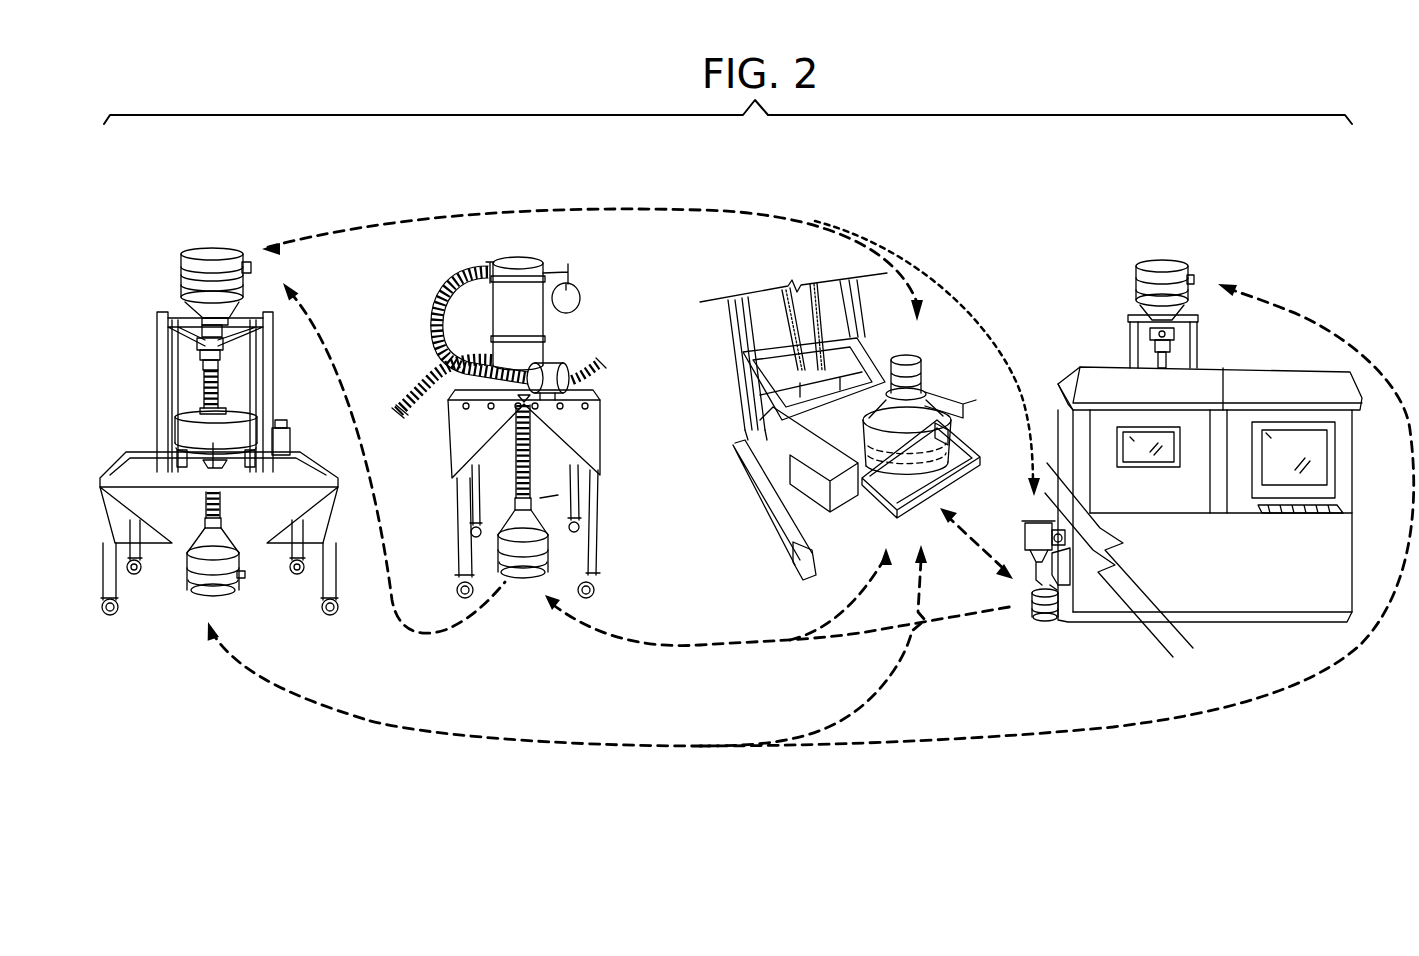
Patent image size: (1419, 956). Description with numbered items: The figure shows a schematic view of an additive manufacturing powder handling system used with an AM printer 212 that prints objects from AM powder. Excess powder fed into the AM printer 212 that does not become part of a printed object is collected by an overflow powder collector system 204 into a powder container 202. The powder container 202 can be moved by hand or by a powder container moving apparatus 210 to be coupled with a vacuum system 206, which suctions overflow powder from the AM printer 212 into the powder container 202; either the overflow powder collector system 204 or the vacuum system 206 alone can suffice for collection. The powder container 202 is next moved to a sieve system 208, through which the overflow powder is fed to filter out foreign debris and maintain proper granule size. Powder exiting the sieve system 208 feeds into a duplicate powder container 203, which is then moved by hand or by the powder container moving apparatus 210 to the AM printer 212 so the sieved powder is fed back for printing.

The powder container 202 is at (202, 246).
The duplicate powder container 203 is at (196, 585).
The overflow powder collector system 204 is at (1085, 655).
The vacuum system 206 is at (565, 240).
The sieve system 208 is at (238, 216).
The powder container moving apparatus 210 is at (762, 260).
The AM printer 212 is at (1240, 632).